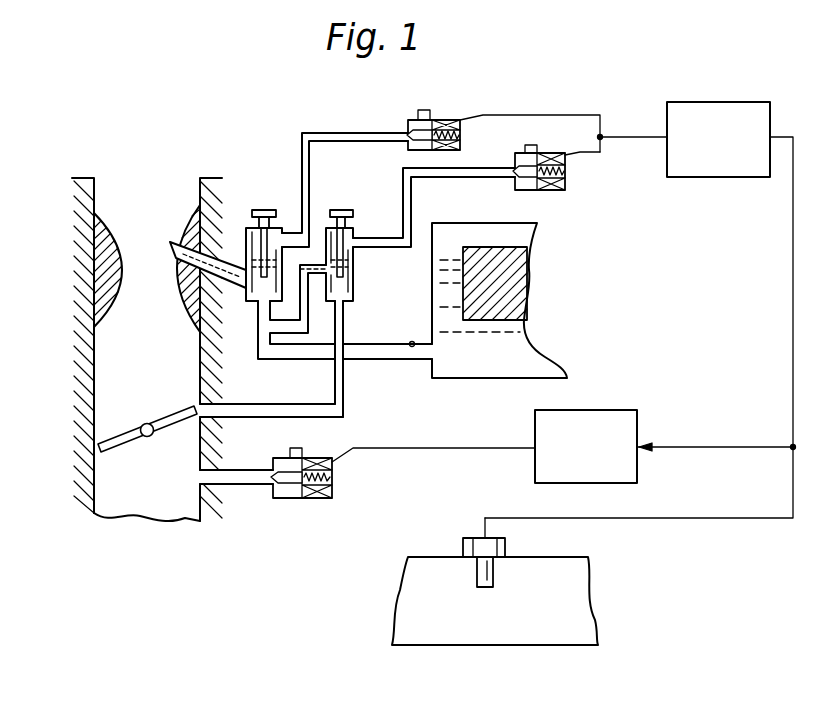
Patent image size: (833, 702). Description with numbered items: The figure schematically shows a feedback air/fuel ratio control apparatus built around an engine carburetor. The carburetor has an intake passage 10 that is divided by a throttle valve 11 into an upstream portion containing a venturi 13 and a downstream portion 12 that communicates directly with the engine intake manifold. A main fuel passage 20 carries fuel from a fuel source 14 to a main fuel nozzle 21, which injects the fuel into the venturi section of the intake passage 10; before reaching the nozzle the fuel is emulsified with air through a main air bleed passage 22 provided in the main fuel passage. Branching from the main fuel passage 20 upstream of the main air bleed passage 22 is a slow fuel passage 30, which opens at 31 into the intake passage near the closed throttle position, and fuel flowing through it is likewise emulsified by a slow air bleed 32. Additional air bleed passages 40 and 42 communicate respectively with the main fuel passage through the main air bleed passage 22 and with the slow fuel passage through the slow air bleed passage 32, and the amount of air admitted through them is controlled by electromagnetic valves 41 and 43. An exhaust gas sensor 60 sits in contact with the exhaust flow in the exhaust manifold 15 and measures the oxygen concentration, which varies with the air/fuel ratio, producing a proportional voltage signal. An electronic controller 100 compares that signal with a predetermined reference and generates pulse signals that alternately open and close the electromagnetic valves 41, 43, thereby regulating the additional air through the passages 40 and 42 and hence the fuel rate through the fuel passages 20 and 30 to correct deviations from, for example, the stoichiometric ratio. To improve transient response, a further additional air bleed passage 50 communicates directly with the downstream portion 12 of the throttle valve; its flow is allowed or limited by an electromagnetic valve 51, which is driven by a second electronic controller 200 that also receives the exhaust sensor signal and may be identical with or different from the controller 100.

The intake passage 10 is at (153, 362).
The throttle valve 11 is at (134, 428).
The downstream portion 12 is at (154, 491).
The venturi 13 is at (185, 232).
The fuel source 14 is at (479, 369).
The exhaust manifold 15 is at (483, 633).
The main fuel passage 20 is at (292, 360).
The main fuel nozzle 21 is at (172, 258).
The main air bleed passage 22 is at (252, 221).
The slow fuel passage 30 is at (345, 395).
The slow fuel passage opening 31 is at (213, 406).
The slow air bleed 32 is at (332, 221).
The additional air bleed passage 40 is at (370, 132).
The electromagnetic valve 41 is at (447, 119).
The additional air bleed passage 42 is at (486, 156).
The electromagnetic valve 43 is at (557, 191).
The additional air bleed passage 50 is at (251, 469).
The electromagnetic valve 51 is at (323, 499).
The exhaust gas sensor 60 is at (505, 548).
The electronic controller 100 is at (717, 102).
The electronic controller 200 is at (608, 410).